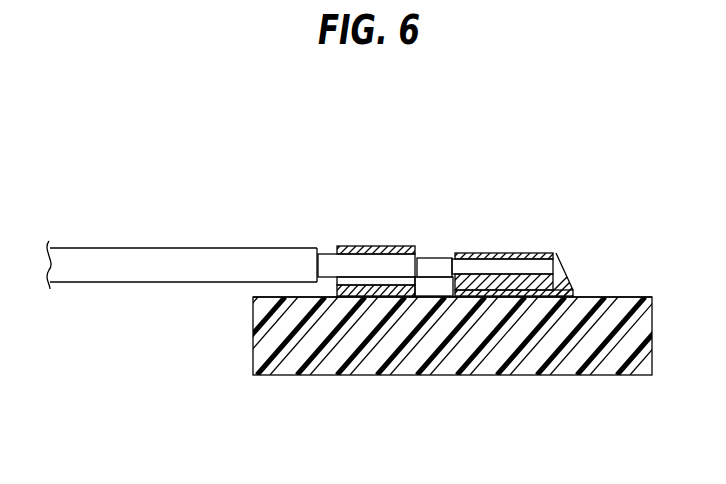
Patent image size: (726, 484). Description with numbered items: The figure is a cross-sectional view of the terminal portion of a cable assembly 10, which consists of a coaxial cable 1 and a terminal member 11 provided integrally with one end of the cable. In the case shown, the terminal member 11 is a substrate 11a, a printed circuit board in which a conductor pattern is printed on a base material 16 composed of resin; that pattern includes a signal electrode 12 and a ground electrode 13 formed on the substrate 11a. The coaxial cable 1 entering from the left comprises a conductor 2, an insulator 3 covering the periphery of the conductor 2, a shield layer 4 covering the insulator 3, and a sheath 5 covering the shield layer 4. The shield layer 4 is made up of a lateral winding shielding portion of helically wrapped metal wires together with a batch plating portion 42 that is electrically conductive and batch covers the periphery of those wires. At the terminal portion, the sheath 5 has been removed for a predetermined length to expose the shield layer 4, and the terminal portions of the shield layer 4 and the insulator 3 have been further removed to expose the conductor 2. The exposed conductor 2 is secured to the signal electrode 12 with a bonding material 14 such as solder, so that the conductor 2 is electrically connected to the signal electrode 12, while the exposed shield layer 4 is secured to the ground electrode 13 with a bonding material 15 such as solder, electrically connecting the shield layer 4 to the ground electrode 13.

The cable assembly 10 is at (251, 133).
The coaxial cable 1 is at (66, 229).
The sheath 5 is at (157, 253).
The shield layer 4 is at (330, 257).
The batch plating portion 42 is at (362, 265).
The insulator 3 is at (437, 257).
The conductor 2 is at (518, 257).
The bonding material 14 is at (556, 260).
The signal electrode 12 is at (573, 293).
The ground electrode 13 is at (365, 287).
The bonding material 15 is at (392, 283).
The base material 16 is at (578, 375).
The terminal member 11 is at (643, 221).
The substrate 11a is at (658, 290).